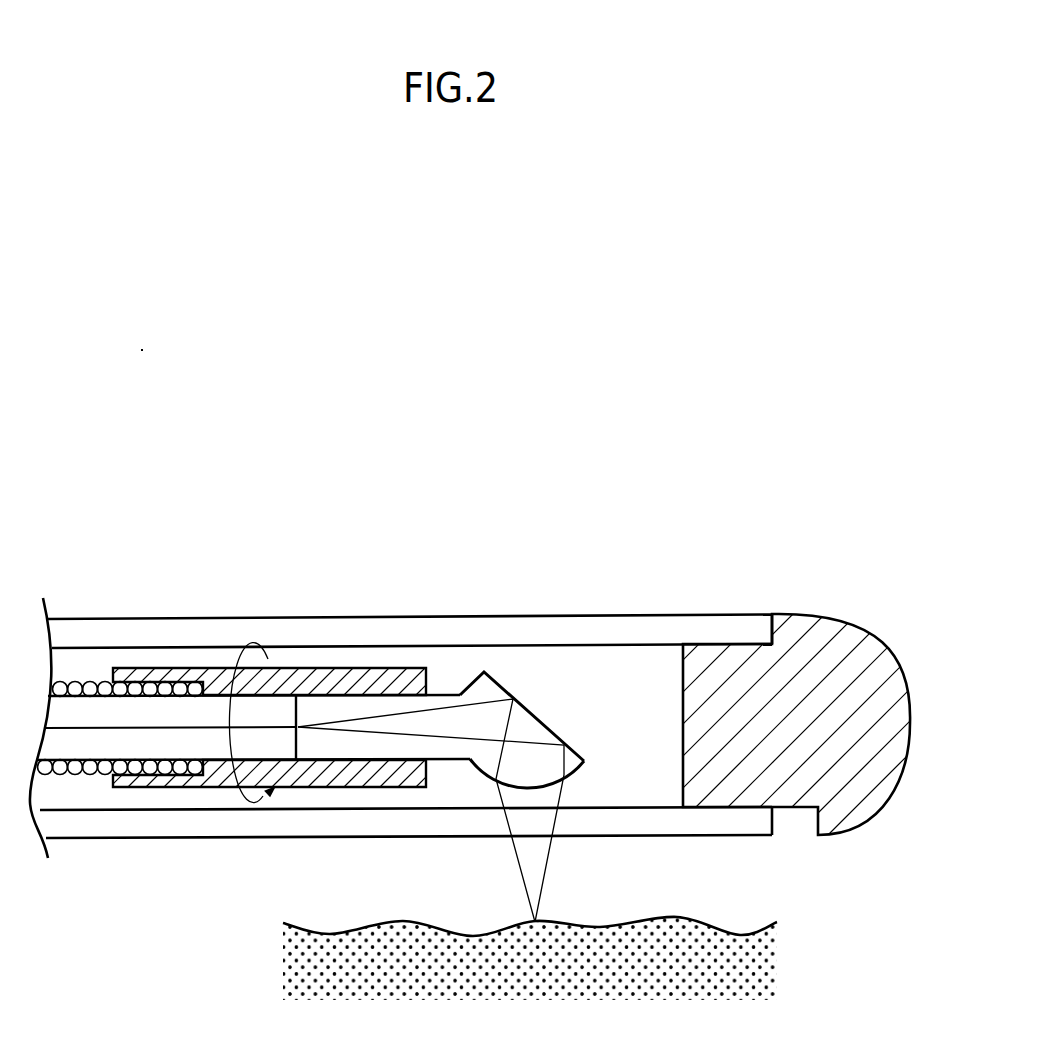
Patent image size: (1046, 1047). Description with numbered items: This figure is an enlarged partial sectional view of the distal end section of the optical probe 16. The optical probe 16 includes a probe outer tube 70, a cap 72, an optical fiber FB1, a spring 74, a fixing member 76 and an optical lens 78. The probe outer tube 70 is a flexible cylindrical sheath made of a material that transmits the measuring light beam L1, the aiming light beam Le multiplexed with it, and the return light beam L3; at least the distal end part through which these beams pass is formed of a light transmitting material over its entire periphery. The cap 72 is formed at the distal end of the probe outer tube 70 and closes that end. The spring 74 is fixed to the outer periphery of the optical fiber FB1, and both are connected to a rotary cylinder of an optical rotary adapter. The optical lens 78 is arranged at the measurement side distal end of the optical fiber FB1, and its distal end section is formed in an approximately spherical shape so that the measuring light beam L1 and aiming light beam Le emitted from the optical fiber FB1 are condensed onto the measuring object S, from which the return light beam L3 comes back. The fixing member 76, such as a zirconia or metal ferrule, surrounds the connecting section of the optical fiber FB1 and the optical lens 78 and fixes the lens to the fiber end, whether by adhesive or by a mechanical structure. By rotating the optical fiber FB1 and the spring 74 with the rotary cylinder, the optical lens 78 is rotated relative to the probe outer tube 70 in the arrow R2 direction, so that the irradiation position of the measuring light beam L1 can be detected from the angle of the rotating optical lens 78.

The optical probe 16 is at (188, 556).
The probe outer tube 70 is at (360, 630).
The cap 72 is at (808, 652).
The spring 74 is at (80, 767).
The fixing member 76 is at (290, 680).
The optical lens 78 is at (473, 680).
The optical fiber FB1 is at (167, 743).
The arrow R2 direction R2 is at (233, 723).
The measuring light beam L1 is at (520, 898).
The aiming light beam Le is at (416, 810).
The return light beam L3 is at (560, 852).
The measuring object S is at (313, 962).